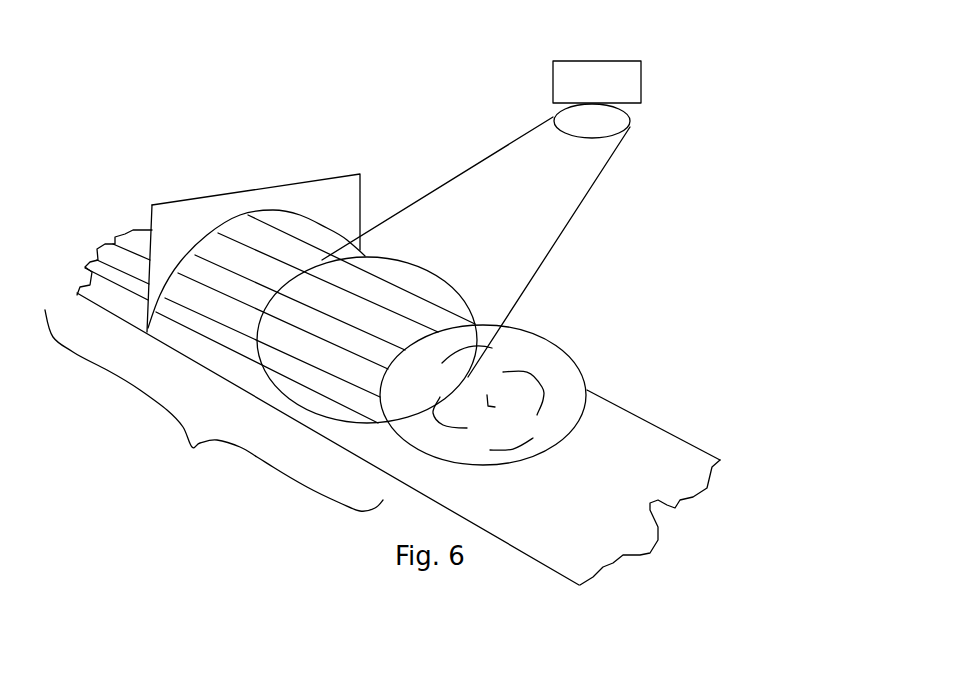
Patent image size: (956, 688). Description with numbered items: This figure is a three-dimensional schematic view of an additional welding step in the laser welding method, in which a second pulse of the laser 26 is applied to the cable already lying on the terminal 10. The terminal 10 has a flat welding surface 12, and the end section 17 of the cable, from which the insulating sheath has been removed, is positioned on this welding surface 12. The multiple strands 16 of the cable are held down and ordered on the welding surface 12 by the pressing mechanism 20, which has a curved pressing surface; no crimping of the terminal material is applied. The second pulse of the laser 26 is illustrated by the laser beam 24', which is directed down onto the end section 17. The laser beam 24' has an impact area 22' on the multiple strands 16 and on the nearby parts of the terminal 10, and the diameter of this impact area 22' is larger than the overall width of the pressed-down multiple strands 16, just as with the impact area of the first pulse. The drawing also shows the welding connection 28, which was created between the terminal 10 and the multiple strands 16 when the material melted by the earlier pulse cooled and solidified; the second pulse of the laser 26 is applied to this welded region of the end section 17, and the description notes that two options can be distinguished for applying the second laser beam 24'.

The terminal 10 is at (682, 405).
The welding surface 12 is at (614, 404).
The multiple strands 16 is at (510, 327).
The end section 17 is at (214, 410).
The pressing mechanism 20 is at (300, 183).
The impact area 22' is at (450, 309).
The laser beam 24' is at (476, 224).
The laser 26 is at (552, 88).
The welding connection 28 is at (575, 362).